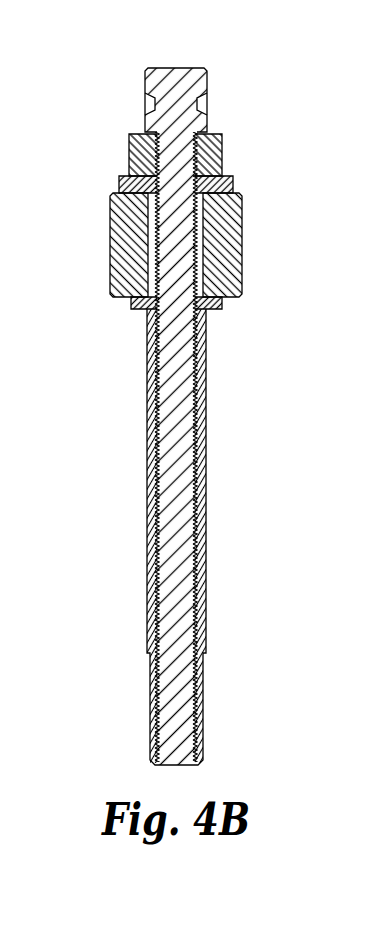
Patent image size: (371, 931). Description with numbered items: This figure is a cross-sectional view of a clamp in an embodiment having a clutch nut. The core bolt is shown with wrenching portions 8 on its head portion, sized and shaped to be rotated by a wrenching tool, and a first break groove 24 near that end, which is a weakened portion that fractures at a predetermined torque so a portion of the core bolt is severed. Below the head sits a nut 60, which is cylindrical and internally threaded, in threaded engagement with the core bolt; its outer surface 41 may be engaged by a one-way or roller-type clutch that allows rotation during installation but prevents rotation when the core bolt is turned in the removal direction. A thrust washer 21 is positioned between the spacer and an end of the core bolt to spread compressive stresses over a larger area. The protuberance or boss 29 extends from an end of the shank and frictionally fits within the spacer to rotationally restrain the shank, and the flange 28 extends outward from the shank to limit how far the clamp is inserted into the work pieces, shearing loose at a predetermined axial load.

The wrenching portions 8 is at (172, 78).
The first break groove 24 is at (157, 101).
The thrust washer 21 is at (130, 168).
The outer surface of the nut 41 is at (225, 153).
The nut 60 is at (230, 164).
The protuberance or boss 29 is at (215, 283).
The flange 28 is at (223, 310).